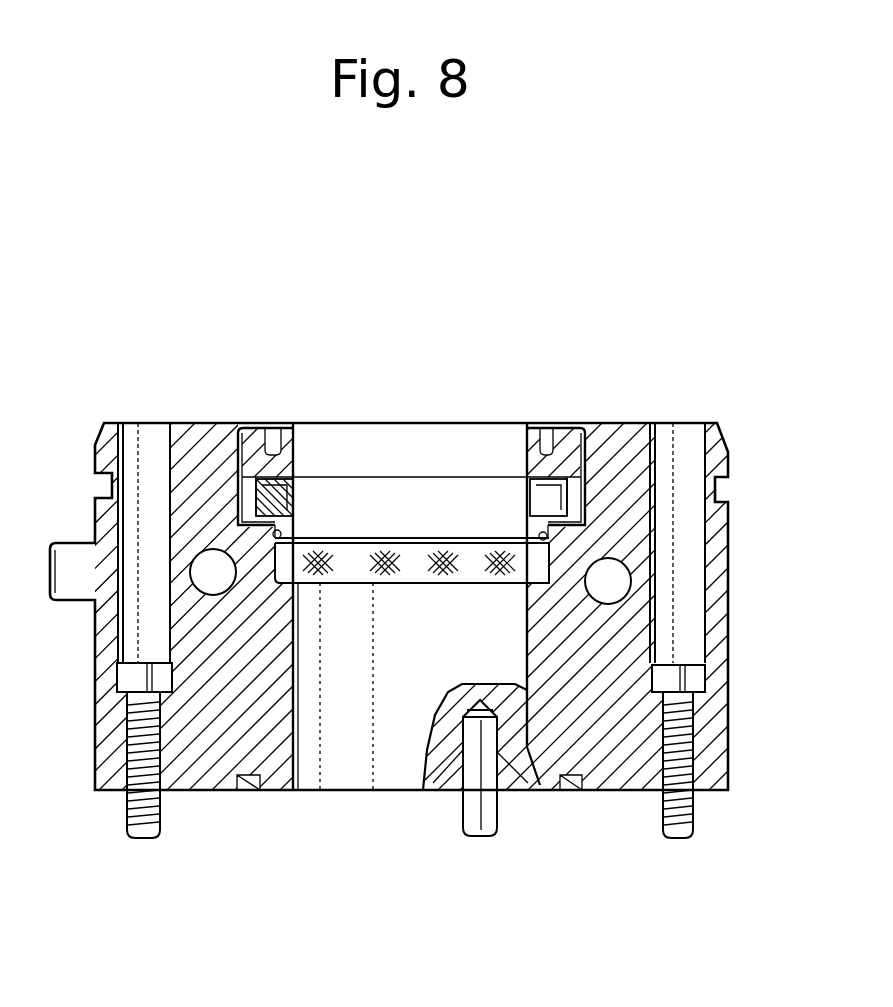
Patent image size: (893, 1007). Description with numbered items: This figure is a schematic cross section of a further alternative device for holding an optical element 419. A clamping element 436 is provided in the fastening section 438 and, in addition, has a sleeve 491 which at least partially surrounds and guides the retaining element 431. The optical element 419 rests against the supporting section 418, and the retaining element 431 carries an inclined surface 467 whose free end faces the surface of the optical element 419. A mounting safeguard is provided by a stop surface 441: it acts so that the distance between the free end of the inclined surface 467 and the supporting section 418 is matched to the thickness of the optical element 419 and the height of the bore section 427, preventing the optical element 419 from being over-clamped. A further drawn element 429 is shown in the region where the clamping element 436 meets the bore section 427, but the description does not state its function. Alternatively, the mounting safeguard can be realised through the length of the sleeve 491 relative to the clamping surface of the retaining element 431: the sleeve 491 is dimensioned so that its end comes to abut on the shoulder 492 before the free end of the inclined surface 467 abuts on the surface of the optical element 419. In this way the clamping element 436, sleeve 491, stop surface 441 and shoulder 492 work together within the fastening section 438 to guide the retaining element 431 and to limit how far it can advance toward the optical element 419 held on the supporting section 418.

The fastening section 438 is at (226, 451).
The clamping element 436 is at (262, 445).
The stop surface 441 is at (282, 492).
The O-ring 429 is at (280, 530).
The inclined surface 467 is at (539, 534).
The retaining element 431 is at (529, 475).
The sleeve 491 is at (597, 505).
The shoulder 492 is at (562, 540).
The bore section 427 is at (558, 552).
The supporting section 418 is at (290, 588).
The optical element 419 is at (418, 578).